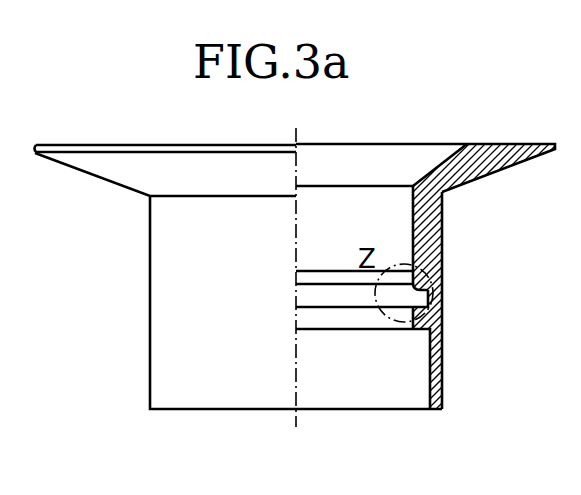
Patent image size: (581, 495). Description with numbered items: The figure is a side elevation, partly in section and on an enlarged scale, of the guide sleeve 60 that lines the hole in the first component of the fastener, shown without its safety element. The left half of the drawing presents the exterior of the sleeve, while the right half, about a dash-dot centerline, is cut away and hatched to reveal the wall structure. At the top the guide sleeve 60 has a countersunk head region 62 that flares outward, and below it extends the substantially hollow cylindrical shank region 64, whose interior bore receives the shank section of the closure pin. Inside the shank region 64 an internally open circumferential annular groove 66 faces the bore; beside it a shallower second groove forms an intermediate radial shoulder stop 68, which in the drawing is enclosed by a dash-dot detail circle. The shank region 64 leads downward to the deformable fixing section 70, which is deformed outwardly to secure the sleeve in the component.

The guide sleeve 60 is at (136, 297).
The countersunk head region 62 is at (488, 143).
The shank region 64 is at (443, 229).
The annular groove 66 is at (432, 293).
The radial shoulder stop 68 is at (405, 268).
The deformable fixing section 70 is at (444, 372).